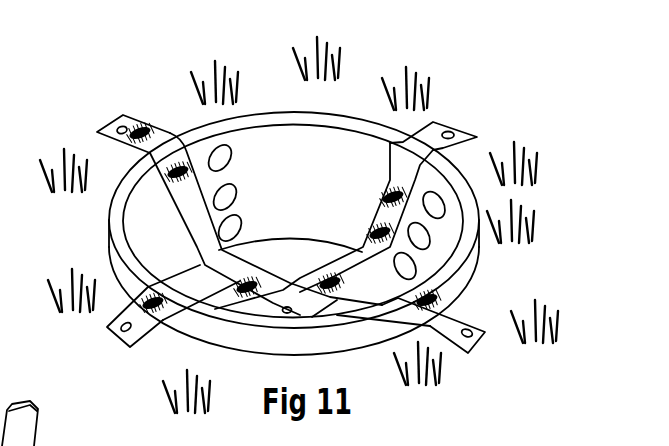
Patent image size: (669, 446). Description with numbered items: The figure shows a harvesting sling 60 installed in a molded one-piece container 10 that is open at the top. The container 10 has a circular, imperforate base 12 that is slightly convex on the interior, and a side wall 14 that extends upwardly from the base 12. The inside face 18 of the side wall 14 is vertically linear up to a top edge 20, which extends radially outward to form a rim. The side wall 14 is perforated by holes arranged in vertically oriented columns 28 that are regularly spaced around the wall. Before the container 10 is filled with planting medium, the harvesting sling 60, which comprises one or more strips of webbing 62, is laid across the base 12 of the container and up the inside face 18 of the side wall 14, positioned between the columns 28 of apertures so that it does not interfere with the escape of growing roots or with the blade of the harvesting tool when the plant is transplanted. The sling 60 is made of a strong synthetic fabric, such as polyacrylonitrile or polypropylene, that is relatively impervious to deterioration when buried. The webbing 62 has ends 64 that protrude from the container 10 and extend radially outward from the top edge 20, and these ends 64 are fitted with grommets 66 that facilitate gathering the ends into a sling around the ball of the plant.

The container 10 is at (341, 108).
The base 12 is at (297, 269).
The side wall 14 is at (278, 201).
The inside face 18 is at (283, 141).
The top edge 20 is at (479, 208).
The columns 28 is at (215, 140).
The harvesting sling 60 is at (478, 300).
The webbing 62 is at (308, 290).
The ends 64 is at (403, 139).
The grommets 66 is at (460, 138).